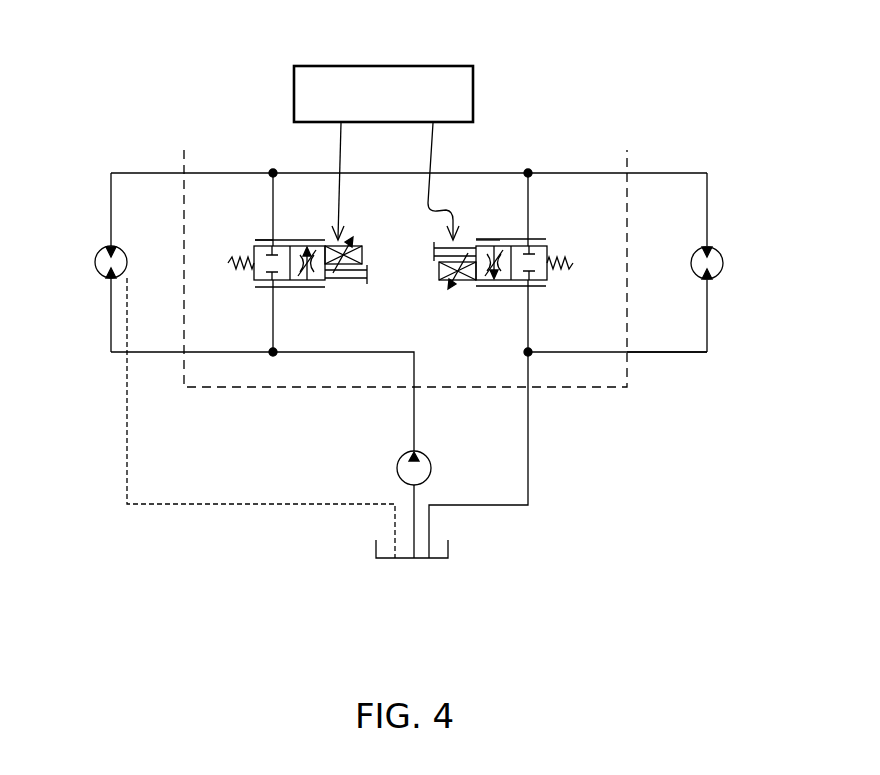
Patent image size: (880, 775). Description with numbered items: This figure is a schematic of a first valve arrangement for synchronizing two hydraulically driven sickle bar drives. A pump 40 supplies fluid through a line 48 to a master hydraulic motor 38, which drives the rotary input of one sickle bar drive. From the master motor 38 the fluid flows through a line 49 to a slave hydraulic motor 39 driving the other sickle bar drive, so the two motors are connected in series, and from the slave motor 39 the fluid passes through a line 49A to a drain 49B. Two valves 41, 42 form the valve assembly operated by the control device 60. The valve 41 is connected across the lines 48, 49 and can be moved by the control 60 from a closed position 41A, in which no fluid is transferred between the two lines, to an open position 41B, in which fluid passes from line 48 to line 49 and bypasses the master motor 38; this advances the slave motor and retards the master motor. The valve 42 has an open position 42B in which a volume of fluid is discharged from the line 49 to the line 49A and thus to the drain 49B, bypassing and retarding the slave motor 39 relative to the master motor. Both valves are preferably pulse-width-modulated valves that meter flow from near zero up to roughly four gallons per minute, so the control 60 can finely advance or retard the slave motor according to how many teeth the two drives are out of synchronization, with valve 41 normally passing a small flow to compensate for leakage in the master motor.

The control device 60 is at (380, 66).
The line 49 is at (268, 138).
The master hydraulic motor 38 is at (101, 275).
The slave hydraulic motor 39 is at (715, 274).
The valve 41 is at (308, 287).
The closed position 41A is at (255, 240).
The open position 41B is at (300, 209).
The valve 42 is at (535, 240).
The open position 42B is at (488, 240).
The line 48 is at (210, 353).
The line 49A is at (640, 354).
The pump 40 is at (425, 469).
The drain 49B is at (448, 552).